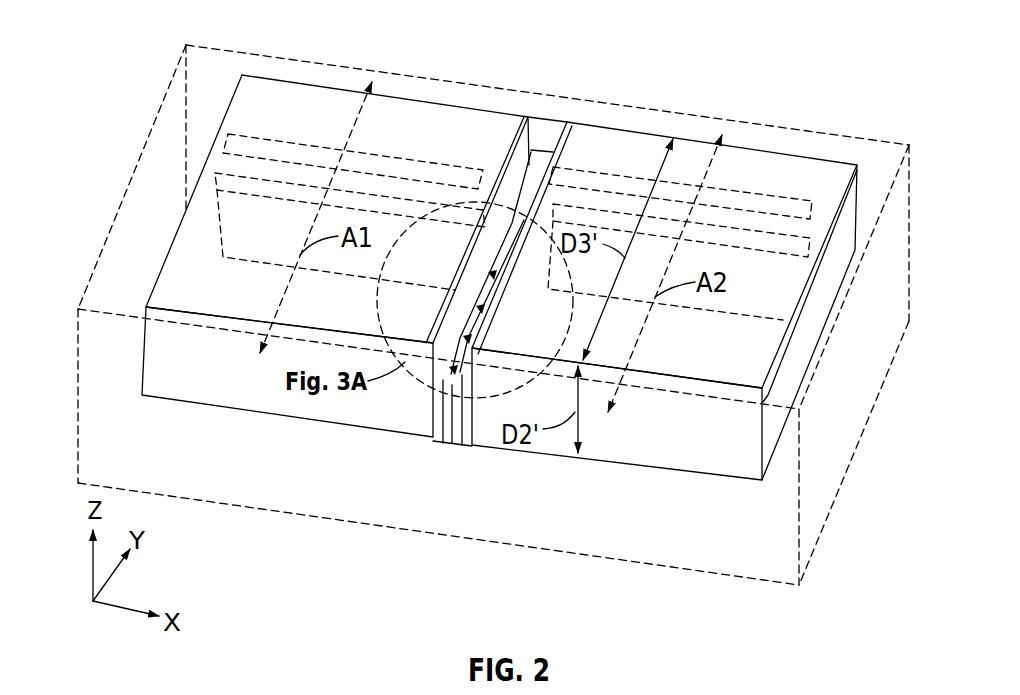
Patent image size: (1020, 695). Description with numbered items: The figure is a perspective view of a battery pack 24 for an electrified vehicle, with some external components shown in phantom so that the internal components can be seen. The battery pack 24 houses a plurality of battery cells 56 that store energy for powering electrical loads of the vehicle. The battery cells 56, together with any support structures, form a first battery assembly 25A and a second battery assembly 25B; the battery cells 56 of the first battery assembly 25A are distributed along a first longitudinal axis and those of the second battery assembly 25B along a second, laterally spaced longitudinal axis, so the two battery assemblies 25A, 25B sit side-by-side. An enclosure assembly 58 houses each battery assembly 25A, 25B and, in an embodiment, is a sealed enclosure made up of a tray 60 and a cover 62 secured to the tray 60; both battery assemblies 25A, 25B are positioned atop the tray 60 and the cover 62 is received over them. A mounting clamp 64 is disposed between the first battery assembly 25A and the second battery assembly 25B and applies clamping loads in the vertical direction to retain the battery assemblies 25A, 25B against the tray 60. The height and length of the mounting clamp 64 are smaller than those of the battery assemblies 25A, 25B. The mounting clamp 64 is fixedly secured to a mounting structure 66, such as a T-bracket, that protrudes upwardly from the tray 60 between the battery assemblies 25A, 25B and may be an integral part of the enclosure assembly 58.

The battery pack 24 is at (500, 255).
The first battery assembly 25A is at (395, 118).
The second battery assembly 25B is at (792, 174).
The battery cells 56 is at (247, 137).
The enclosure assembly 58 is at (503, 333).
The tray 60 is at (650, 536).
The cover 62 is at (550, 123).
The mounting clamp 64 is at (503, 288).
The mounting structure 66 is at (443, 437).